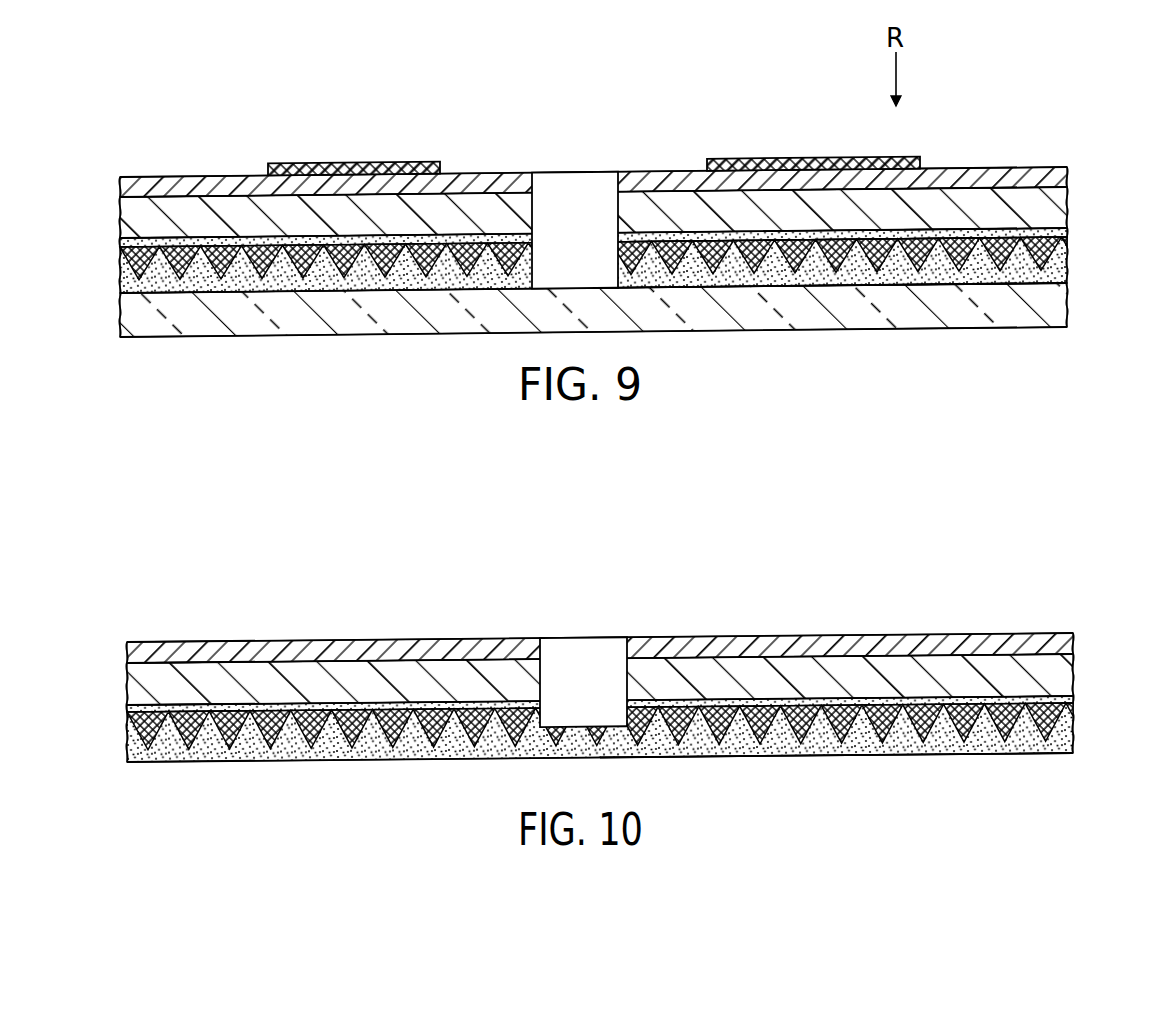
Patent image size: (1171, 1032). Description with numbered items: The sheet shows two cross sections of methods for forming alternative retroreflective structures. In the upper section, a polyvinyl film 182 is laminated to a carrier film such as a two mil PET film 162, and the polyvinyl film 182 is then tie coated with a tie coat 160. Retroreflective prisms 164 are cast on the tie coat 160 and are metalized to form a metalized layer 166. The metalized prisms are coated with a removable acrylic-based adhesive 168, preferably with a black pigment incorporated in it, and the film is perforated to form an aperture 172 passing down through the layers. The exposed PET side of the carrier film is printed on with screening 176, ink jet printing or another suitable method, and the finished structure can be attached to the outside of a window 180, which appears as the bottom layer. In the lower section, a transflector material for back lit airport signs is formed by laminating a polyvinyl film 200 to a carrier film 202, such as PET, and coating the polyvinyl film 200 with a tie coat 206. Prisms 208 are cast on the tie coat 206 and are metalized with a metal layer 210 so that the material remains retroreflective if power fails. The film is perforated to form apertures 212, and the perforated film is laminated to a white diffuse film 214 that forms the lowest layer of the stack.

In FIG. 9, the tie coat 160 is at (1067, 233).
In FIG. 9, the PET film 162 is at (1067, 179).
In FIG. 9, the prisms 164 is at (124, 264).
In FIG. 9, the metalized layer 166 is at (124, 284).
In FIG. 9, the acrylic-based adhesive 168 is at (1065, 276).
In FIG. 9, the aperture 172 is at (600, 190).
In FIG. 9, the screening 176 is at (361, 163).
In FIG. 9, the window 180 is at (1010, 327).
In FIG. 9, the polyvinyl film 182 is at (1065, 207).
In FIG. 10, the polyvinyl film 200 is at (1073, 678).
In FIG. 10, the carrier film 202 is at (1036, 633).
In FIG. 10, the tie coat 206 is at (126, 710).
In FIG. 10, the prisms 208 is at (1073, 711).
In FIG. 10, the metal layer 210 is at (126, 746).
In FIG. 10, the apertures 212 is at (605, 652).
In FIG. 10, the white diffuse film 214 is at (982, 748).